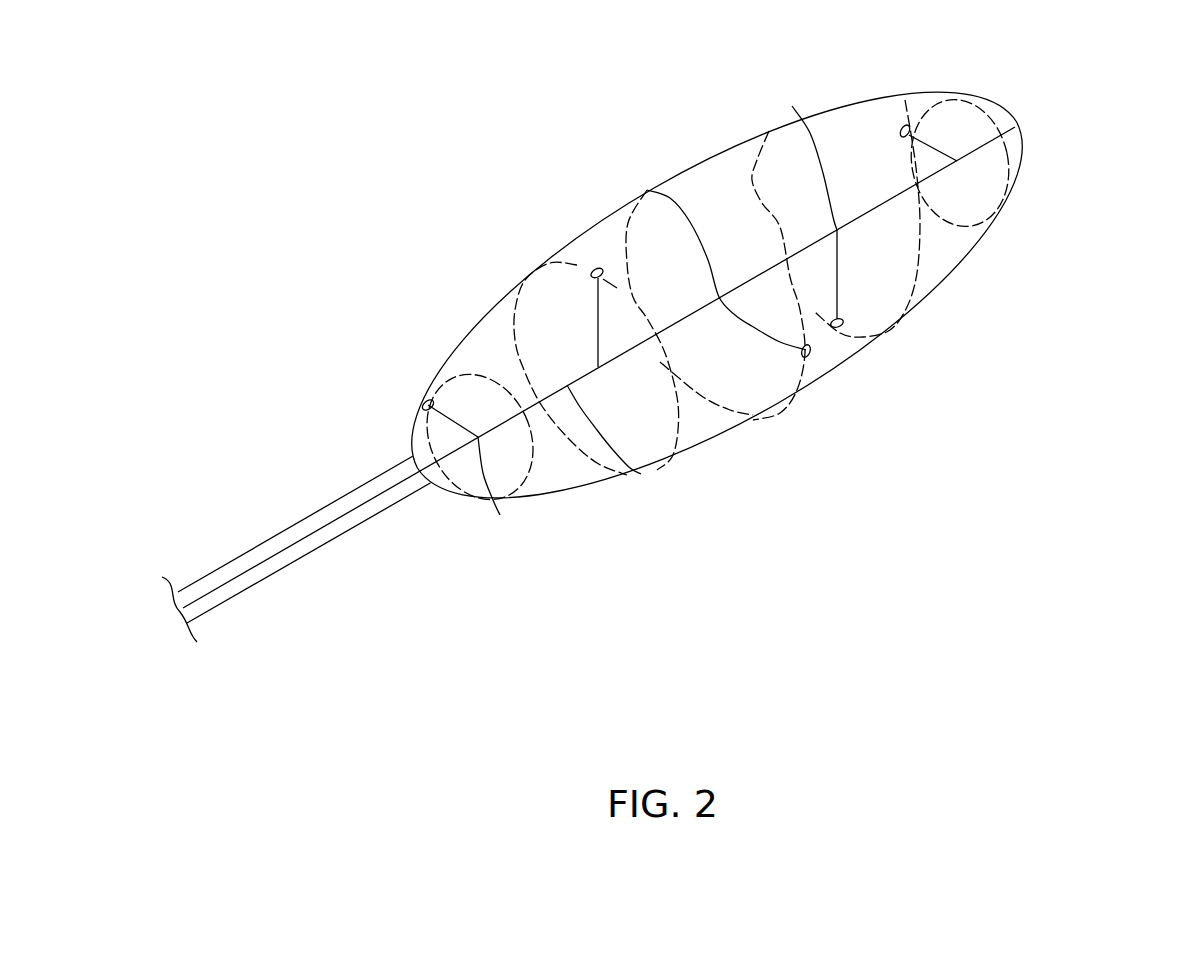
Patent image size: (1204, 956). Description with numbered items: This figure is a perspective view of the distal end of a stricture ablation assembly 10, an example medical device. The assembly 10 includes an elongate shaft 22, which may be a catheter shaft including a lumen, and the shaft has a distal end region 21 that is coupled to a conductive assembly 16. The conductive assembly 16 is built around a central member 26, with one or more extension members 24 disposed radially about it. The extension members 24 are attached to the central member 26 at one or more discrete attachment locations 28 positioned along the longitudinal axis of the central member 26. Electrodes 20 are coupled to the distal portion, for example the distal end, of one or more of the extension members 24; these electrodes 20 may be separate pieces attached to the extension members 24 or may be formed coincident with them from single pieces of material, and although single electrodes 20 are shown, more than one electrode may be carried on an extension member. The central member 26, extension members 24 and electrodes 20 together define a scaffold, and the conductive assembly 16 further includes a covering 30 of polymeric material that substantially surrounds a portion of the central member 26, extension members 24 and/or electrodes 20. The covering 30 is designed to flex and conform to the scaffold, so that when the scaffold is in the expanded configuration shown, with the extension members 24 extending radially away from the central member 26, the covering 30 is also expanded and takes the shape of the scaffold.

The stricture ablation assembly 10 is at (380, 95).
The conductive assembly 16 is at (1075, 212).
The electrodes 20 is at (898, 125).
The distal end region 21 is at (368, 430).
The elongate shaft 22 is at (293, 522).
The extension members 24 is at (996, 104).
The central member 26 is at (641, 473).
The attachment locations 28 is at (792, 106).
The covering 30 is at (723, 172).